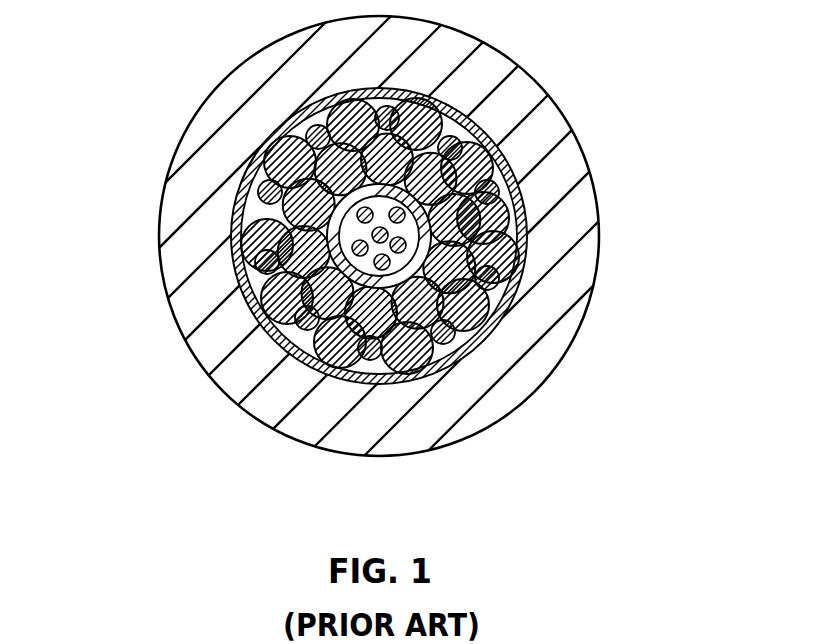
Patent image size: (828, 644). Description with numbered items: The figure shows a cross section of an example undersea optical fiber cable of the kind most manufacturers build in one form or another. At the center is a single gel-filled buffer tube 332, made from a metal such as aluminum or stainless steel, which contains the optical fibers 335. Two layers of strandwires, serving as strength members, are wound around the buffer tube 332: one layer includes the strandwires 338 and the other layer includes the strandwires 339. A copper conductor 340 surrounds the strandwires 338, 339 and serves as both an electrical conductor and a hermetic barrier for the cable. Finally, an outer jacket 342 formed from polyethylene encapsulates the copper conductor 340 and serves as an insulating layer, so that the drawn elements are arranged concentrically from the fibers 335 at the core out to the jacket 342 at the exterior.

The gel-filled buffer tube 332 is at (328, 238).
The optical fibers 335 is at (434, 238).
The strandwires 338 is at (268, 148).
The strandwires 339 is at (515, 197).
The copper conductor 340 is at (327, 372).
The outer jacket 342 is at (553, 339).